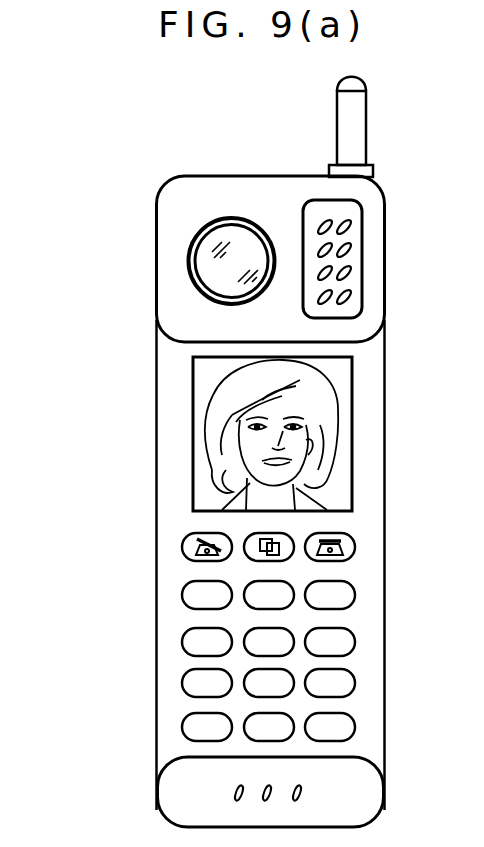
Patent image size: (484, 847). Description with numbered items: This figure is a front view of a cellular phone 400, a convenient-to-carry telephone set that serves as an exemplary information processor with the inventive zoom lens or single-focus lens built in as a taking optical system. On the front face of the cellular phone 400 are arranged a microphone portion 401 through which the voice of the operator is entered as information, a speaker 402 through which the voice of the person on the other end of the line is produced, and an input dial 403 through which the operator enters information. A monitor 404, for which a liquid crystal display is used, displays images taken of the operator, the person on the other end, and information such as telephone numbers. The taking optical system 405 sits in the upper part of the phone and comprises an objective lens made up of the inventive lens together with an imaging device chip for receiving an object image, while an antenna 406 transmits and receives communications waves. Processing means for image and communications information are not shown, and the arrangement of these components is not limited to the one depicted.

The cellular phone 400 is at (112, 499).
The microphone portion 401 is at (235, 795).
The speaker 402 is at (315, 212).
The input dial 403 is at (194, 640).
The monitor 404 is at (203, 430).
The taking optical system 405 is at (203, 262).
The antenna 406 is at (357, 112).